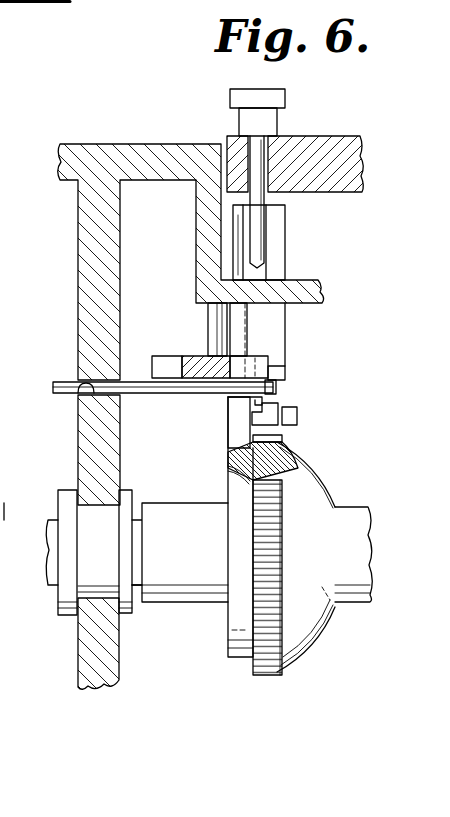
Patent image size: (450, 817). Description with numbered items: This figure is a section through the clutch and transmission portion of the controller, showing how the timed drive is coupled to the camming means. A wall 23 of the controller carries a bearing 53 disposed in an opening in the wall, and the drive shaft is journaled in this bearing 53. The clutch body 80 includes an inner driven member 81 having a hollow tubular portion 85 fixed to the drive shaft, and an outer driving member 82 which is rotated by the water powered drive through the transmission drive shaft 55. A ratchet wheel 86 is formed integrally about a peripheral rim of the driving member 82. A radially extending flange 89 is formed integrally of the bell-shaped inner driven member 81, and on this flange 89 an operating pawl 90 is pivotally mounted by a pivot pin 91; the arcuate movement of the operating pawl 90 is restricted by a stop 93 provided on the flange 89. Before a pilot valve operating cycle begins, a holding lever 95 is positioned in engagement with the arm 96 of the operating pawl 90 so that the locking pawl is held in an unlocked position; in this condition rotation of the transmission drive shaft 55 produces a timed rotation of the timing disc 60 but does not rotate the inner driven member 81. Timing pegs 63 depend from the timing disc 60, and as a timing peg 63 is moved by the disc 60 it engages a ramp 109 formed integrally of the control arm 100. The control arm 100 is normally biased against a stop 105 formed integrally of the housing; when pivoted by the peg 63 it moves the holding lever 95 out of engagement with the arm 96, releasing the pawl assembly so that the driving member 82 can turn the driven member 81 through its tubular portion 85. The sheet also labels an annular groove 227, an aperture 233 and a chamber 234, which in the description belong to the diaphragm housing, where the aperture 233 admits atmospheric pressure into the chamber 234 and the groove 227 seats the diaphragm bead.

The wall 23 is at (100, 238).
The timing disc 60 is at (322, 140).
The timing peg 63 is at (243, 113).
The ramp 109 is at (273, 236).
The stop 105 is at (206, 322).
The control arm 100 is at (157, 366).
The holding lever 95 is at (252, 364).
The arm 96 is at (272, 374).
The annular groove 227 is at (60, 381).
The aperture 233 is at (76, 394).
The chamber 234 is at (278, 387).
The stop 93 is at (250, 400).
The flange 89 is at (237, 428).
The operating pawl 90 is at (280, 398).
The pivot pin 91 is at (298, 417).
The ratchet wheel 86 is at (285, 438).
The bearing 53 is at (128, 497).
The clutch body 80 is at (190, 580).
The hollow tubular portion 85 is at (175, 578).
The inner driven member 81 is at (237, 642).
The outer driving member 82 is at (281, 574).
The transmission drive shaft 55 is at (361, 588).